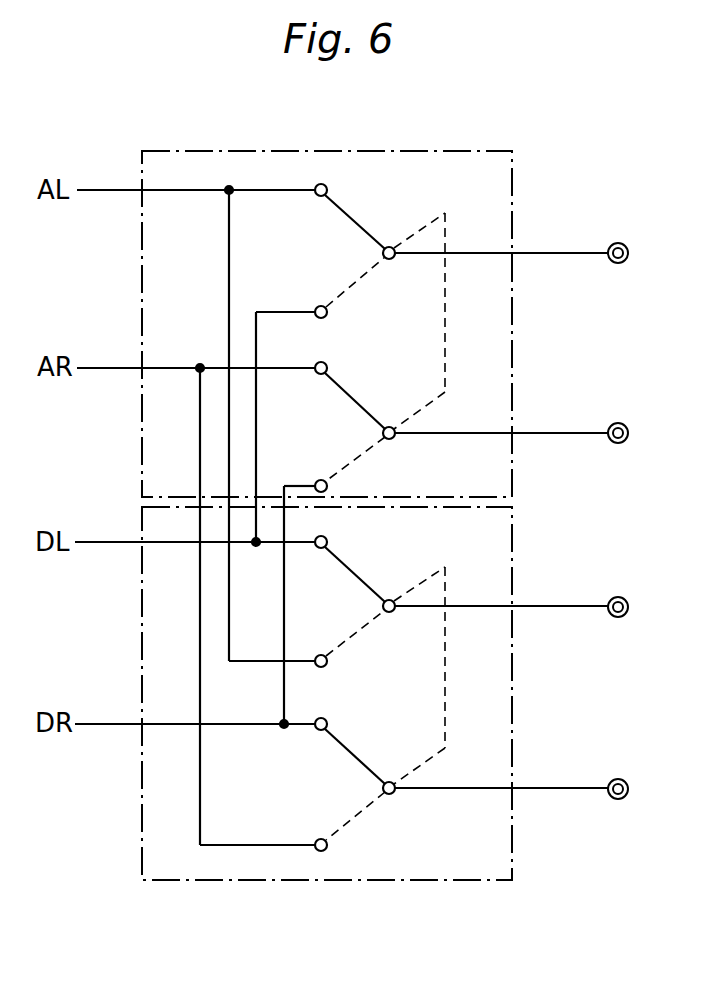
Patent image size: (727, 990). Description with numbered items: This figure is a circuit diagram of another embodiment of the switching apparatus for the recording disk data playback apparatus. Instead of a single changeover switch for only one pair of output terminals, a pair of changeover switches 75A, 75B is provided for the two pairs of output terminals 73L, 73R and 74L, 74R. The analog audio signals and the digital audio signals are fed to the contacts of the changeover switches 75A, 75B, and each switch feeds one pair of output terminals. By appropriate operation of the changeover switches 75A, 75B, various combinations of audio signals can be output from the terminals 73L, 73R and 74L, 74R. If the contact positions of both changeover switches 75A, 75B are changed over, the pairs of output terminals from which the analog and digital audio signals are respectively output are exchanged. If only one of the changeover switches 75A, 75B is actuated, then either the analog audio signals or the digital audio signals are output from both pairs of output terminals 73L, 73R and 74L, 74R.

The changeover switch 75A is at (437, 150).
The changeover switch 75B is at (454, 882).
The left-channel output terminal 73L is at (625, 243).
The right-channel output terminal 73R is at (625, 423).
The left-channel output terminal 74L is at (632, 587).
The right-channel output terminal 74R is at (624, 779).